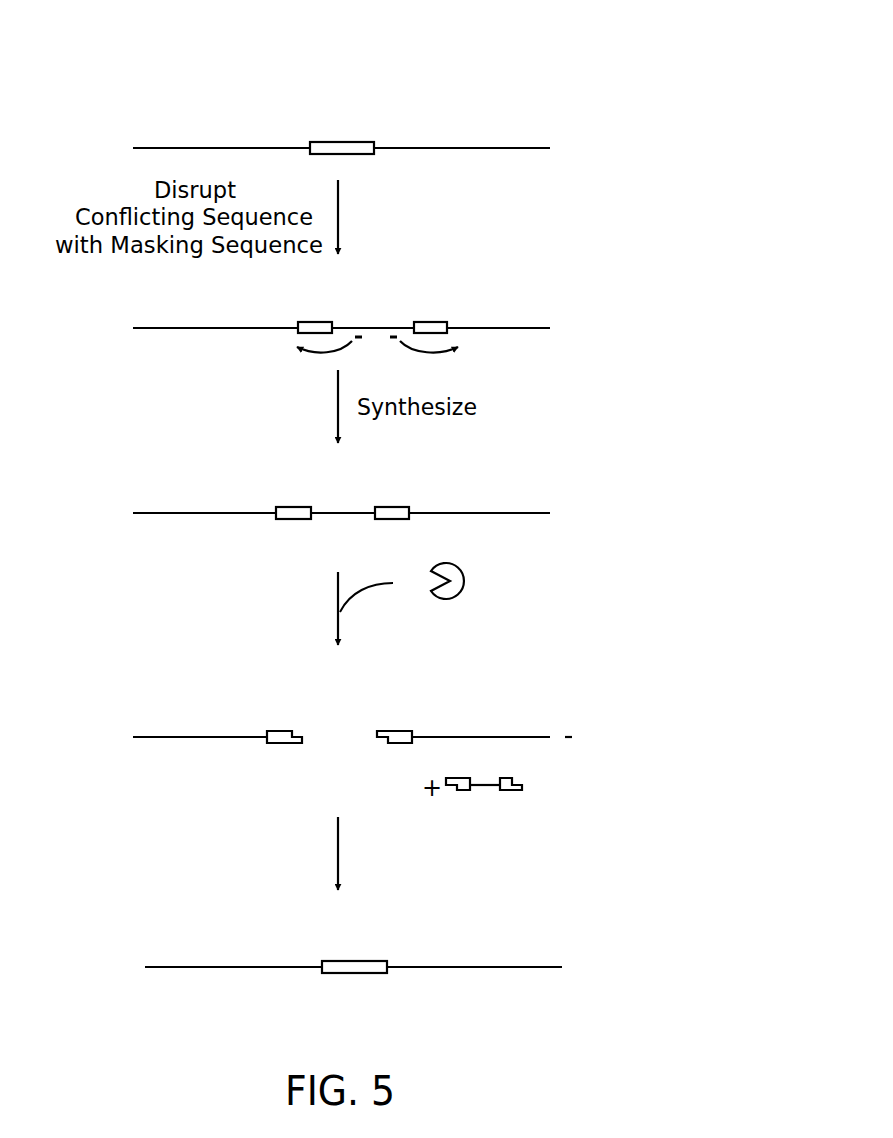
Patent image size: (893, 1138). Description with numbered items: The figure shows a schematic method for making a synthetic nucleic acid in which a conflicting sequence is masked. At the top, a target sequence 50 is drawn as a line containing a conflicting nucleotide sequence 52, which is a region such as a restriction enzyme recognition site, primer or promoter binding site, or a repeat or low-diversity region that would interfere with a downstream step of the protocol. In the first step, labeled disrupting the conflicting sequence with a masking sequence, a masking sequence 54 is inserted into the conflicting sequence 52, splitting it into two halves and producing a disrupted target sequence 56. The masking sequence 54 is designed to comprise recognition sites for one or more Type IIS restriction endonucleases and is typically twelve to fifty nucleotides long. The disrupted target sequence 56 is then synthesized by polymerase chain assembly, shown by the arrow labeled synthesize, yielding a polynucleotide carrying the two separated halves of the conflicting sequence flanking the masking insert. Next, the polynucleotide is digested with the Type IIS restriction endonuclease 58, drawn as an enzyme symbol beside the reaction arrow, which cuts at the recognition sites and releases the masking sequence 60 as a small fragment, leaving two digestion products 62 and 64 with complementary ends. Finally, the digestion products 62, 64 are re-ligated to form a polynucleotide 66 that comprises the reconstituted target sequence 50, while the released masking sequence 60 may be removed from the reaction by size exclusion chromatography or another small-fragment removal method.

The target sequence 50 is at (341, 98).
The conflicting nucleotide sequence 52 is at (340, 141).
The masking sequence 54 is at (416, 315).
The disrupted target sequence 56 is at (347, 288).
The Type IIS restriction endonuclease 58 is at (466, 578).
The released masking sequence 60 is at (482, 790).
The digestion product 62 is at (210, 737).
The digestion product 64 is at (483, 737).
The polynucleotide comprising the reconstituted target sequence 66 is at (455, 917).